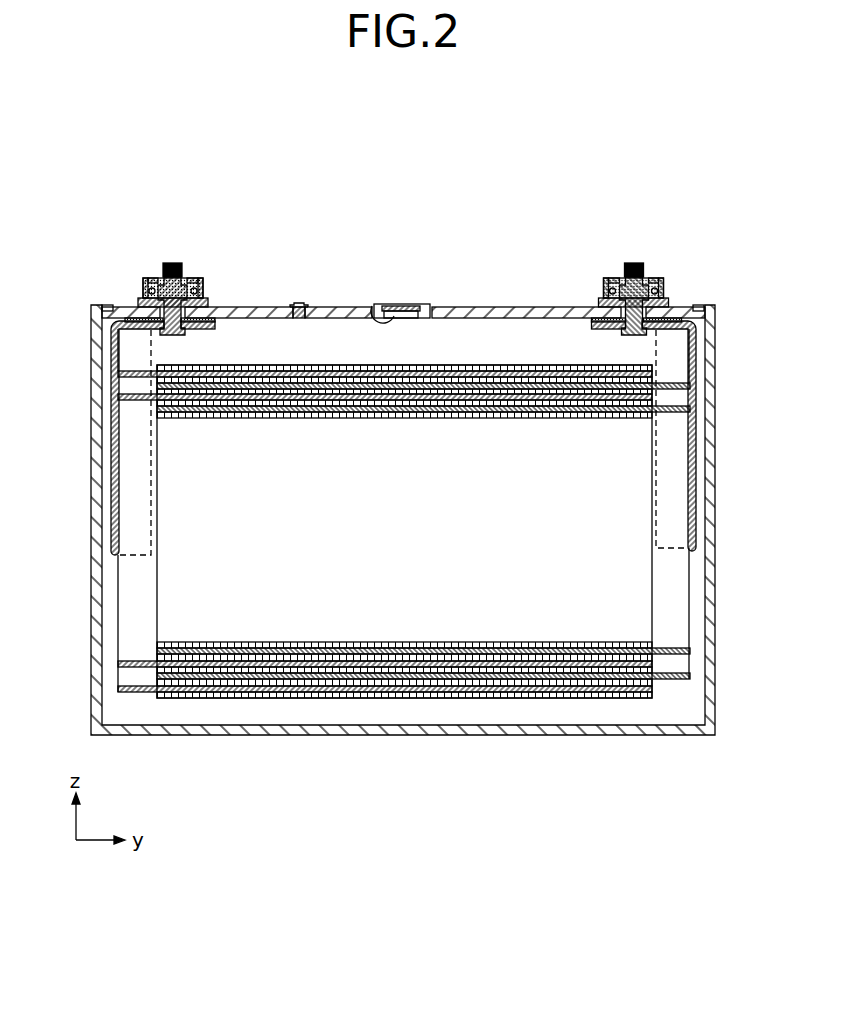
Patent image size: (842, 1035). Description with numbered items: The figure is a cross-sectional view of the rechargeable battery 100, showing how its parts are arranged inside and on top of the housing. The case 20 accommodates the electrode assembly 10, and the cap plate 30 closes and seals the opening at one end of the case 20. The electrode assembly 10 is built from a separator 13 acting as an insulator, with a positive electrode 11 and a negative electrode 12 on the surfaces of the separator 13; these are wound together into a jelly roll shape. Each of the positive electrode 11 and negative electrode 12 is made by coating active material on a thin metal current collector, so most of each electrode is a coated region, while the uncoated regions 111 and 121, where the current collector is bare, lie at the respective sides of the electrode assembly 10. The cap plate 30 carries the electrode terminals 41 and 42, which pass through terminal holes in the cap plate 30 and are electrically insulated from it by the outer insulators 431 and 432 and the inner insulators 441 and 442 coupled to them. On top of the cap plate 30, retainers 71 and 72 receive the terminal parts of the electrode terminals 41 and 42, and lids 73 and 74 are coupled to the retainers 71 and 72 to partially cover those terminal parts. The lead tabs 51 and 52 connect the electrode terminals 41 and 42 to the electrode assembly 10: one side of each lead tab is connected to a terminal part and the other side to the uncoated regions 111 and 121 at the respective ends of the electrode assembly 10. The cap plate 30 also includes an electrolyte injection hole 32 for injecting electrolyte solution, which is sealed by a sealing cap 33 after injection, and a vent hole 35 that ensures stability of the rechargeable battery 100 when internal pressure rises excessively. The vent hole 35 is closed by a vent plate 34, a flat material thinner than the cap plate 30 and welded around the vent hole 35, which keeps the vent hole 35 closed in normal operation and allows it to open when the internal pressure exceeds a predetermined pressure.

The rechargeable battery 100 is at (422, 190).
The electrode assembly 10 is at (404, 589).
The positive electrode 11 is at (242, 700).
The negative electrode 12 is at (301, 680).
The separator 13 is at (408, 668).
The uncoated region 111 is at (135, 692).
The uncoated region 121 is at (668, 679).
The case 20 is at (561, 735).
The cap plate 30 is at (484, 312).
The electrolyte injection hole 32 is at (309, 305).
The sealing cap 33 is at (297, 305).
The vent plate 34 is at (410, 307).
The vent hole 35 is at (378, 308).
The electrode terminal 41 is at (172, 259).
The electrode terminal 42 is at (632, 259).
The lead tab 51 is at (210, 326).
The lead tab 52 is at (598, 326).
The retainer 71 is at (204, 296).
The retainer 72 is at (606, 297).
The lid 73 is at (189, 285).
The lid 74 is at (613, 290).
The outer insulator 431 is at (145, 299).
The outer insulator 432 is at (664, 300).
The inner insulator 441 is at (126, 313).
The inner insulator 442 is at (680, 313).